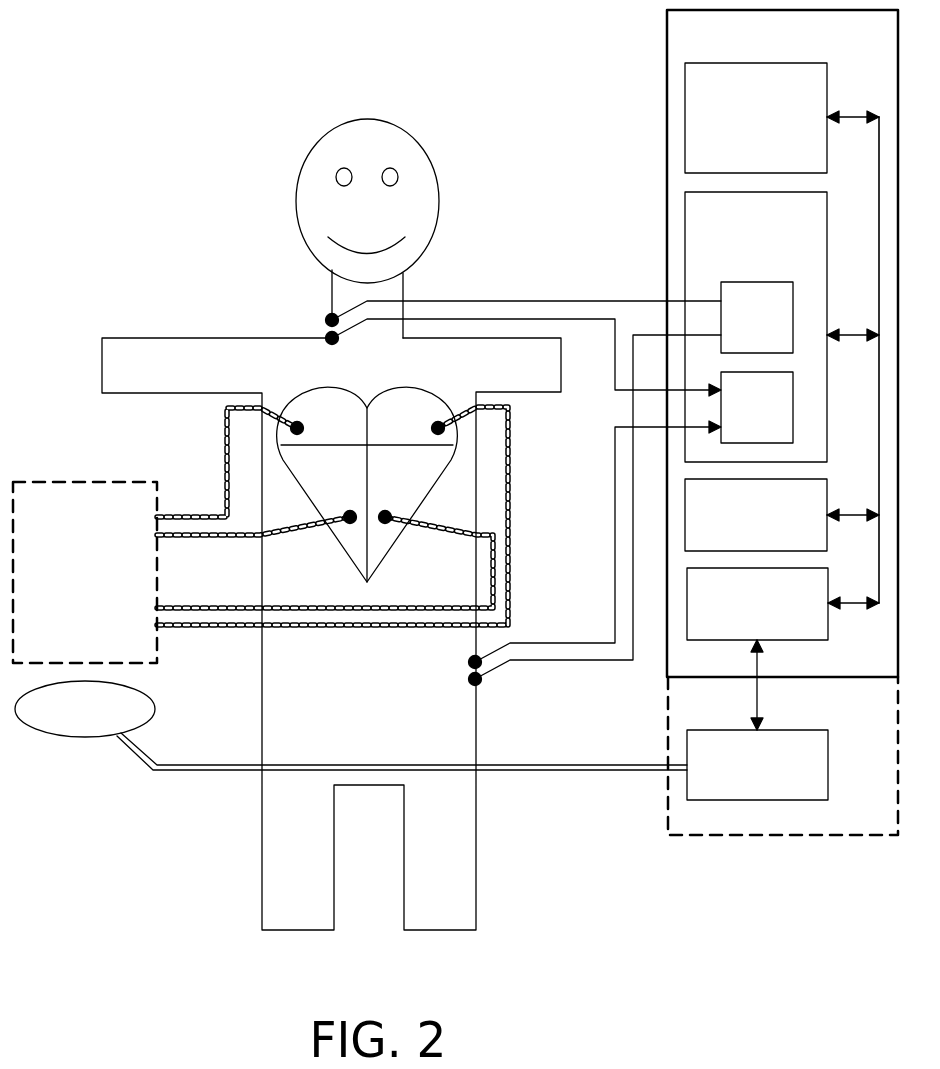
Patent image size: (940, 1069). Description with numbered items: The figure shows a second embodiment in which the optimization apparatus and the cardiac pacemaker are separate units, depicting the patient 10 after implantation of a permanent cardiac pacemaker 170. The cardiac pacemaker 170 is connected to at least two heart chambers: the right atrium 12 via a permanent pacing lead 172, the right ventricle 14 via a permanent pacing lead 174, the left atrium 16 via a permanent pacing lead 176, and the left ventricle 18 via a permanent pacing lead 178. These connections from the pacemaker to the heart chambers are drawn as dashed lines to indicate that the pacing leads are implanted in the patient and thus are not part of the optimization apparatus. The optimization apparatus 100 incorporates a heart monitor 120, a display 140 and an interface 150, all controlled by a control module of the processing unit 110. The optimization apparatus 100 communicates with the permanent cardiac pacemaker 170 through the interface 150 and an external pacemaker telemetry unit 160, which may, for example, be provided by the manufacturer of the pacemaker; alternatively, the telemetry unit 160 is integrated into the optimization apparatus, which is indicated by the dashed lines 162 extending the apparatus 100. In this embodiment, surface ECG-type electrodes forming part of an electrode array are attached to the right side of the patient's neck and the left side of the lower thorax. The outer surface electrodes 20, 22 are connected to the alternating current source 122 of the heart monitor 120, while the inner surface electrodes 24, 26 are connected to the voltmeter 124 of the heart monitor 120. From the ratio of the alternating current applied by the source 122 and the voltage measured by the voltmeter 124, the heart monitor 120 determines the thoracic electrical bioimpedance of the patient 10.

The patient 10 is at (356, 368).
The right atrium 12 is at (319, 404).
The right ventricle 14 is at (353, 548).
The left atrium 16 is at (400, 401).
The left ventricle 18 is at (382, 548).
The outer surface electrode 20 is at (328, 316).
The outer surface electrode 22 is at (470, 687).
The inner surface electrode 24 is at (328, 334).
The inner surface electrode 26 is at (468, 663).
The optimization apparatus 100 is at (682, 46).
The processing unit 110 is at (740, 96).
The heart monitor 120 is at (740, 224).
The alternating current source 122 is at (741, 316).
The voltmeter 124 is at (741, 408).
The display 140 is at (740, 514).
The interface 150 is at (741, 604).
The telemetry unit 160 is at (741, 766).
The dashed lines 162 is at (668, 820).
The cardiac pacemaker 170 is at (68, 519).
The permanent pacing lead 172 is at (227, 413).
The permanent pacing lead 174 is at (252, 538).
The permanent pacing lead 176 is at (510, 445).
The permanent pacing lead 178 is at (492, 556).